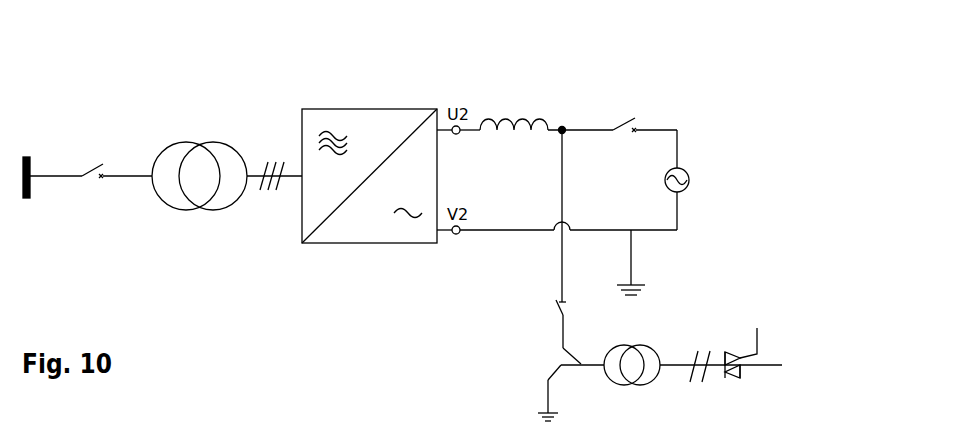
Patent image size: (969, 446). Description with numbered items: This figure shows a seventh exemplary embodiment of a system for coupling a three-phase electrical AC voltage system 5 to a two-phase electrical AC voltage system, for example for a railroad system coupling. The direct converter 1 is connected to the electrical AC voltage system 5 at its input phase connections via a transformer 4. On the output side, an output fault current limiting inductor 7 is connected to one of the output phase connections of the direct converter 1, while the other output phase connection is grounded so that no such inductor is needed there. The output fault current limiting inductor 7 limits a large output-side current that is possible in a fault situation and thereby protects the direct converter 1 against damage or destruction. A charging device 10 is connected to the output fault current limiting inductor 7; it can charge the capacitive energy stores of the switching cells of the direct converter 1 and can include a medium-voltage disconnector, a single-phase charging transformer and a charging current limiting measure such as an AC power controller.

The direct converter 1 is at (343, 109).
The transformer 4 is at (187, 142).
The three-phase electrical AC voltage system 5 is at (33, 146).
The output fault current limiting inductor 7 is at (520, 118).
The charging device 10 is at (702, 300).